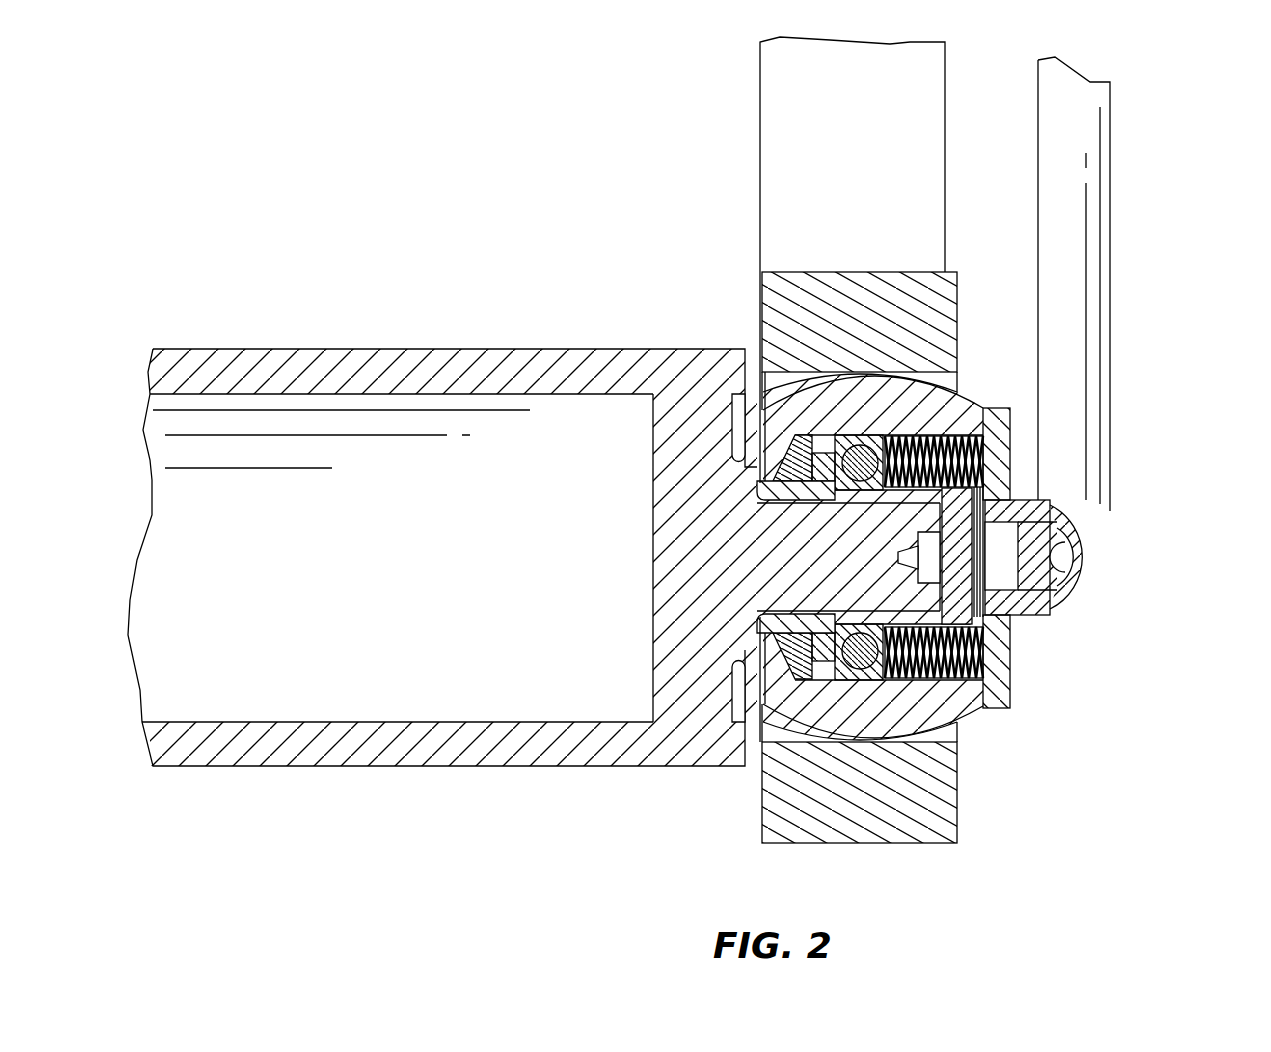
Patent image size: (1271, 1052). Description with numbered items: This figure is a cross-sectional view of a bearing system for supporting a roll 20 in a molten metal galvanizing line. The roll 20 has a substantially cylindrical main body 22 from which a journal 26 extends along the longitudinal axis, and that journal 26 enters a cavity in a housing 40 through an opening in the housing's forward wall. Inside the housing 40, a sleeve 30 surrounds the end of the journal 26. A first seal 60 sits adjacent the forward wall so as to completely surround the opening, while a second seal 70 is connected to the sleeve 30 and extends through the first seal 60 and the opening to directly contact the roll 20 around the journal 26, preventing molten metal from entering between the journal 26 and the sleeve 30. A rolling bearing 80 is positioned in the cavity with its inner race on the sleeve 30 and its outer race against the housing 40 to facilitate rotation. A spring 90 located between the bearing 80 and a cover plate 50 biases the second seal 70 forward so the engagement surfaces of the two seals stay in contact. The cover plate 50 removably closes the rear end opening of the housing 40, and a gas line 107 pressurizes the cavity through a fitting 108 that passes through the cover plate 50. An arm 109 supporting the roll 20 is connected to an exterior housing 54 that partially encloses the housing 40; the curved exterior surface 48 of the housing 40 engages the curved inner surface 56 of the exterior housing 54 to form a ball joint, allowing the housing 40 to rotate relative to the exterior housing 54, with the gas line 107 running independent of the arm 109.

The roll 20 is at (420, 349).
The main body 22 is at (478, 766).
The journal 26 is at (850, 569).
The sleeve 30 is at (965, 620).
The housing 40 is at (838, 440).
The curved exterior surface 48 is at (975, 405).
The cover plate 50 is at (1013, 432).
The exterior housing 54 is at (758, 292).
The curved inner surface 56 is at (958, 378).
The first seal 60 is at (762, 700).
The second seal 70 is at (763, 352).
The bearing 80 is at (863, 450).
The spring 90 is at (983, 703).
The gas line 107 is at (1133, 540).
The fitting 108 is at (1040, 500).
The arm 109 is at (760, 97).